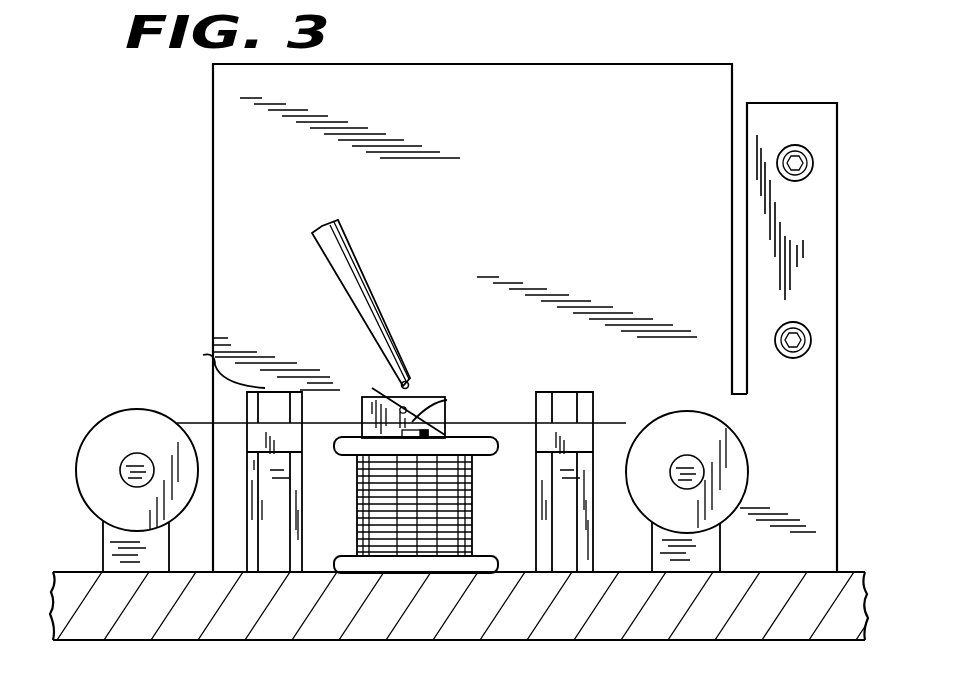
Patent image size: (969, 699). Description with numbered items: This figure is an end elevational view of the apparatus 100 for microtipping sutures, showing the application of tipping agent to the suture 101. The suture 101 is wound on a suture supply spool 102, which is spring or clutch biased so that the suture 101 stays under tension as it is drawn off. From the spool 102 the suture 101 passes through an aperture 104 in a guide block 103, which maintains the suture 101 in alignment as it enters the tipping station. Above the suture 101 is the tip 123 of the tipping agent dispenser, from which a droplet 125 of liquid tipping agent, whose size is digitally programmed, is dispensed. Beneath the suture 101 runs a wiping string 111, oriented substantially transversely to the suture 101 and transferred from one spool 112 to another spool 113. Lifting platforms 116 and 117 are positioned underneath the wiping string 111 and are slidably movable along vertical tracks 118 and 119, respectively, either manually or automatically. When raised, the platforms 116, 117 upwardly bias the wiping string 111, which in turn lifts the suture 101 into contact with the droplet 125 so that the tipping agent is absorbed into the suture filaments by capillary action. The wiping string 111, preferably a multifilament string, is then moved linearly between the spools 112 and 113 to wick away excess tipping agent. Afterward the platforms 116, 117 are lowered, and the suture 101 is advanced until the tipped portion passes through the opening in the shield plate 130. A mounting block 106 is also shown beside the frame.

The apparatus 100 is at (200, 268).
The suture 101 is at (447, 400).
The suture supply spool 102 is at (415, 558).
The guide block 103 is at (372, 413).
The aperture 104 is at (372, 388).
The mounting block 106 is at (797, 113).
The wiping string 111 is at (624, 423).
The spool 112 is at (123, 414).
The spool 113 is at (730, 444).
The lifting platform 116 is at (295, 438).
The lifting platform 117 is at (543, 441).
The vertical track 118 is at (211, 365).
The vertical track 119 is at (562, 521).
The tip 123 is at (407, 366).
The droplet 125 is at (409, 385).
The shield plate 130 is at (640, 186).